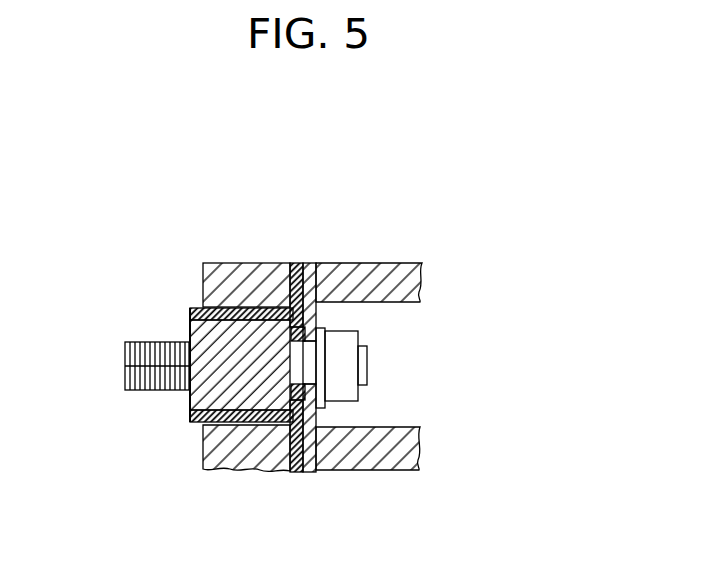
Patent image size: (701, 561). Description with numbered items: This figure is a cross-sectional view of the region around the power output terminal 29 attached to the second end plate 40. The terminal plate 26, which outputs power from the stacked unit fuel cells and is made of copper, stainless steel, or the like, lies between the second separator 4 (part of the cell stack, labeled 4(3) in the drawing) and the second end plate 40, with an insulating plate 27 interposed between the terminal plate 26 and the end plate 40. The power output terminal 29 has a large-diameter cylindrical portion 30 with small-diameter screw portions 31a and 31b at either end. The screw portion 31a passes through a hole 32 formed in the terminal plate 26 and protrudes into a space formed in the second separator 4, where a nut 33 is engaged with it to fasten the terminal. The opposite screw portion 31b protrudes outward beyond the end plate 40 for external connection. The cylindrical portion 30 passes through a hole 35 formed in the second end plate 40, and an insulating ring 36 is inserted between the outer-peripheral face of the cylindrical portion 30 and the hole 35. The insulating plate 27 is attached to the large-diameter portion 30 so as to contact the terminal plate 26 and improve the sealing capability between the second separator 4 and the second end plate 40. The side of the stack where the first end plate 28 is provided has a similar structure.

The second end plate 40 is at (250, 254).
The first end plate 28 is at (250, 254).
The hole 35 is at (242, 434).
The insulating plate 27 is at (300, 262).
The terminal plate 26 is at (314, 254).
The second separator 4 is at (394, 255).
The frame member 3 is at (394, 255).
The cylindrical portion 30 is at (206, 398).
The insulating ring 36 is at (222, 306).
The screw portion 31b is at (125, 362).
The screw portion 31a is at (367, 362).
The power output terminal 29 is at (151, 334).
The nut 33 is at (352, 395).
The hole 32 is at (310, 383).